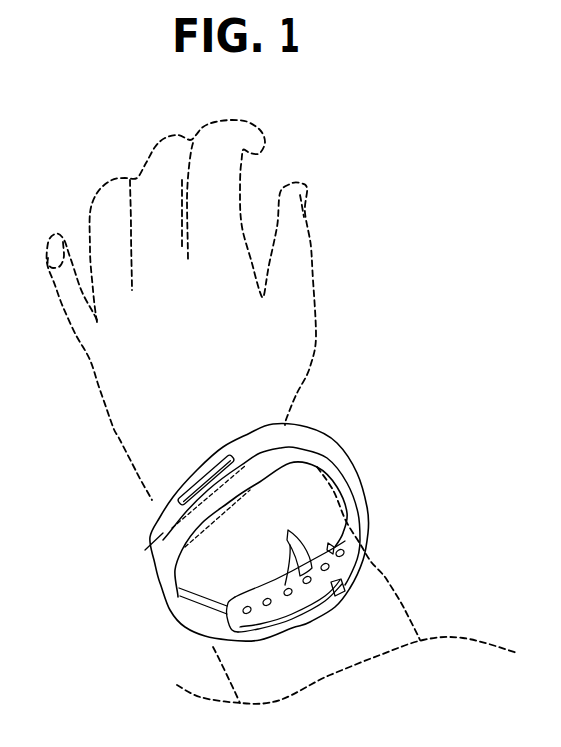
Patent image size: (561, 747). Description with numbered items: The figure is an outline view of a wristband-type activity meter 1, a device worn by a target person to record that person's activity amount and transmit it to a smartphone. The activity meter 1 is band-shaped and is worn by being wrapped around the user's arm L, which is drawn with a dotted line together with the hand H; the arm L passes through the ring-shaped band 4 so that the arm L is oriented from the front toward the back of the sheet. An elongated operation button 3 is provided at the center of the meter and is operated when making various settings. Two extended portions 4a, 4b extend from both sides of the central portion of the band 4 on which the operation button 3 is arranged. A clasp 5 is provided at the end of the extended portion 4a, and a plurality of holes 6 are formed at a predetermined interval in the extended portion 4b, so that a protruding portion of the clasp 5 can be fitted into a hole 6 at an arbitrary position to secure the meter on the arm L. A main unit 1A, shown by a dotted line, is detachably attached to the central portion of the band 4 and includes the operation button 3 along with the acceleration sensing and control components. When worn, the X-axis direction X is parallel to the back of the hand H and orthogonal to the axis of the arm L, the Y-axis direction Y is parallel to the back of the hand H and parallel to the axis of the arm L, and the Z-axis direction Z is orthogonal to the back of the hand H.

The activity meter 1 is at (237, 491).
The main unit 1A is at (223, 443).
The operation button 3 is at (177, 493).
The band 4 is at (244, 491).
The extended portion 4a is at (180, 610).
The extended portion 4b is at (330, 450).
The clasp 5 is at (328, 546).
The holes 6 is at (289, 549).
The hand H is at (320, 252).
The arm L is at (387, 580).
The X-axis direction X is at (222, 495).
The Y-axis direction Y is at (246, 565).
The Z-axis direction Z is at (278, 567).